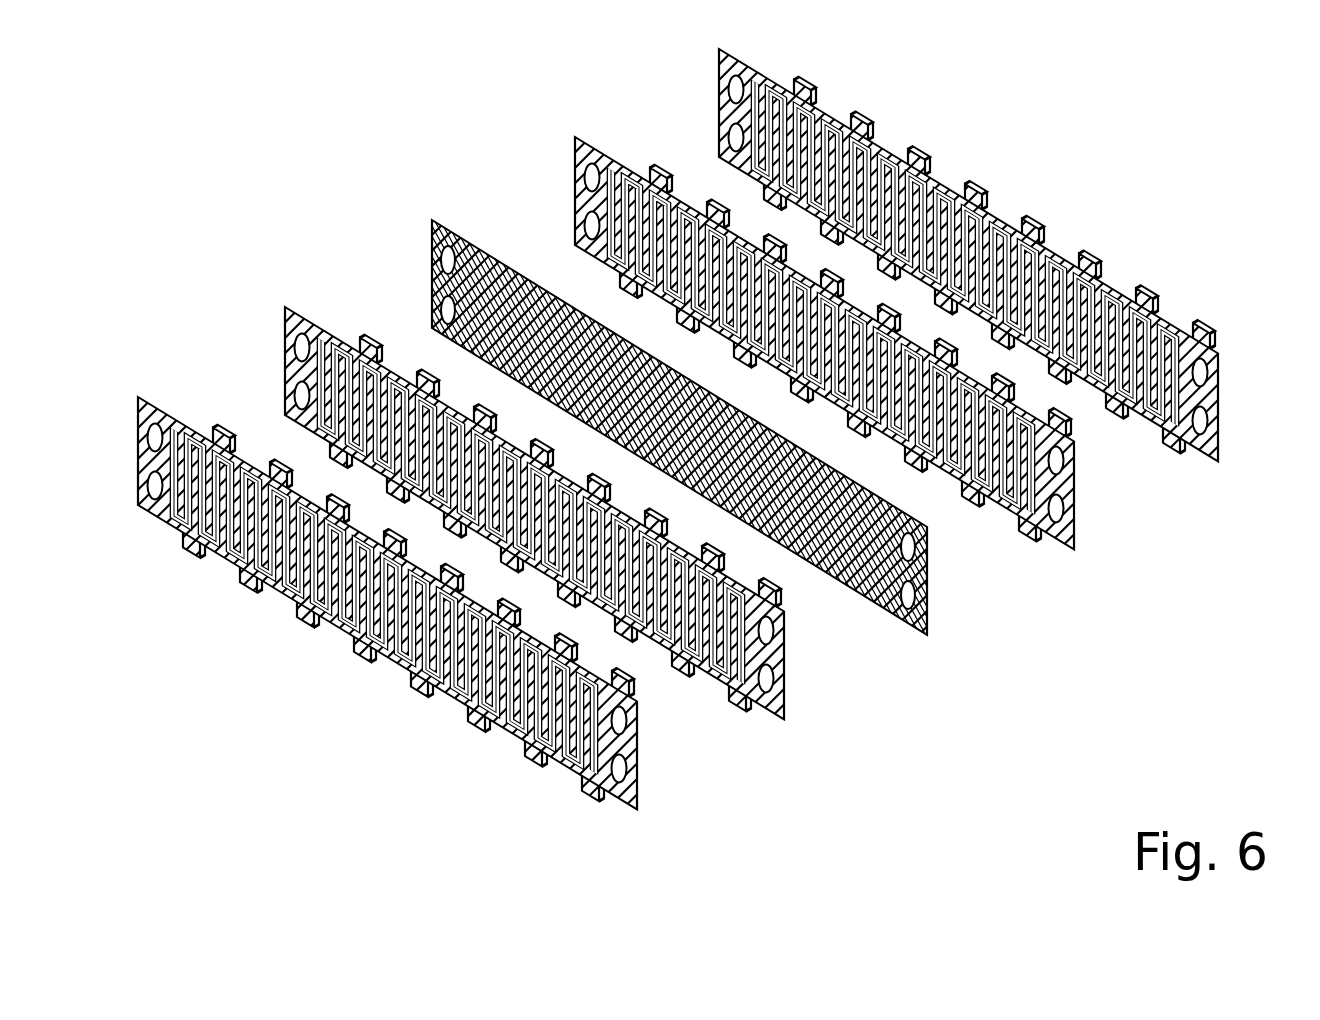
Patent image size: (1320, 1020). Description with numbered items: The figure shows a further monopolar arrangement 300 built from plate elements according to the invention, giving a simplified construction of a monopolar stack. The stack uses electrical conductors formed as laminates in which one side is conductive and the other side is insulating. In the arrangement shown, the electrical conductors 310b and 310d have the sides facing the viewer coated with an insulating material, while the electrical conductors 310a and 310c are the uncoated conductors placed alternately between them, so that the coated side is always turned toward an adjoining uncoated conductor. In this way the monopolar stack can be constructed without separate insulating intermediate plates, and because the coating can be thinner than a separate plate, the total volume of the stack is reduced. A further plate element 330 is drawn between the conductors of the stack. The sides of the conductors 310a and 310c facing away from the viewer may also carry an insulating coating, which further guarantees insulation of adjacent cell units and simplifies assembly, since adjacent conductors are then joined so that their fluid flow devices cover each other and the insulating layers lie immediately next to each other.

The heat exchanger plate stack assembly 300 is at (673, 435).
The electrical conductor 310a is at (637, 768).
The electrical conductor 310b is at (783, 680).
The electrical conductor 310c is at (576, 174).
The electrical conductor 310d is at (718, 88).
The separator plate 330 is at (928, 594).